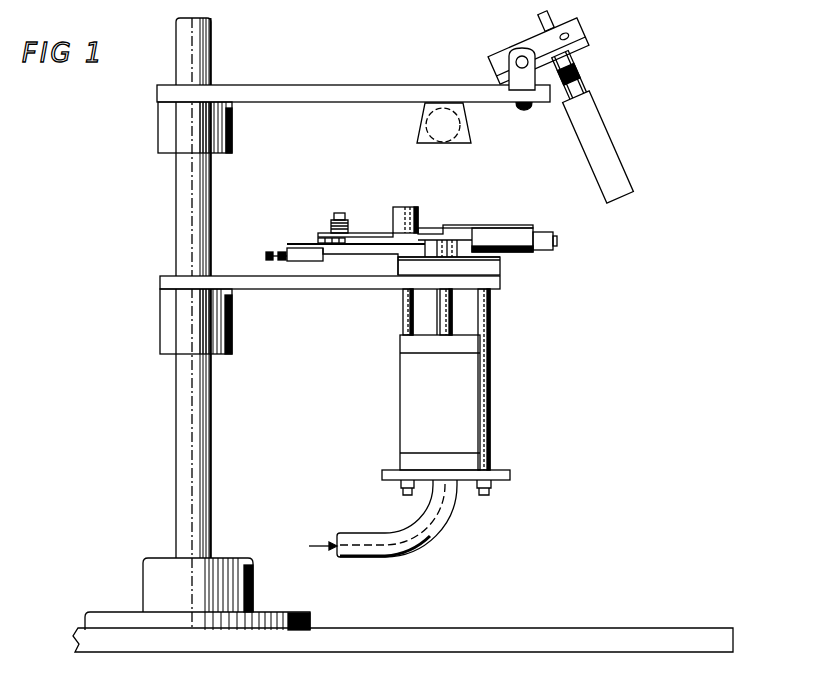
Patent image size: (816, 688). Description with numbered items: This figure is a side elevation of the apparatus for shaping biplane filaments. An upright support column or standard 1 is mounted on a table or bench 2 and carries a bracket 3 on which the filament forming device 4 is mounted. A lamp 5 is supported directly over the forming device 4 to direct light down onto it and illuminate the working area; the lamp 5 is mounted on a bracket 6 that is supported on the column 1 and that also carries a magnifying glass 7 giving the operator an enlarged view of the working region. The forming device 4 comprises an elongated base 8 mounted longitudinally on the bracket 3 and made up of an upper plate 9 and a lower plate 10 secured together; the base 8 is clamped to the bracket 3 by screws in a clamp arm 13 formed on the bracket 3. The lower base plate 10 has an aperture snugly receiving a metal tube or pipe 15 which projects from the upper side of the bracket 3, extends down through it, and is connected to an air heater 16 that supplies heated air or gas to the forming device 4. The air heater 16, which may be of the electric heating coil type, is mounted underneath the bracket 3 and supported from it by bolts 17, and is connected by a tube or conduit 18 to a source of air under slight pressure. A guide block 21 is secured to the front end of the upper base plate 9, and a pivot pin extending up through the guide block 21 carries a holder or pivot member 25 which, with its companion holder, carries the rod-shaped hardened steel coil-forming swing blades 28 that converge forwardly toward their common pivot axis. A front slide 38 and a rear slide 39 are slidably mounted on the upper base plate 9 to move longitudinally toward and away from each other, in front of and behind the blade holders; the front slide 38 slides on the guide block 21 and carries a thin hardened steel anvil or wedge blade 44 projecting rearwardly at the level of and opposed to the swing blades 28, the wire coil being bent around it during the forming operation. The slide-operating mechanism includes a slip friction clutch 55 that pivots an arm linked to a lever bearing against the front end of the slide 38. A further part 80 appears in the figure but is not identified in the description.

The support column 1 is at (177, 440).
The table 2 is at (588, 630).
The bracket 3 is at (283, 290).
The filament forming device 4 is at (486, 219).
The lamp 5 is at (418, 129).
The bracket 6 is at (345, 86).
The magnifying glass 7 is at (603, 137).
The base 8 is at (512, 267).
The upper base plate 9 is at (503, 260).
The lower base plate 10 is at (505, 273).
The clamp arm 13 is at (318, 265).
The air tube 15 is at (456, 305).
The air heater 16 is at (406, 399).
The bolts 17 is at (403, 324).
The conduit 18 is at (375, 532).
The guide block 21 is at (556, 246).
The holder 25 is at (416, 232).
The swing blades 28 is at (438, 240).
The front slide 38 is at (535, 233).
The rear slide 39 is at (304, 246).
The anvil 44 is at (460, 225).
The slip friction clutch 55 is at (331, 217).
The screw 80 is at (268, 254).